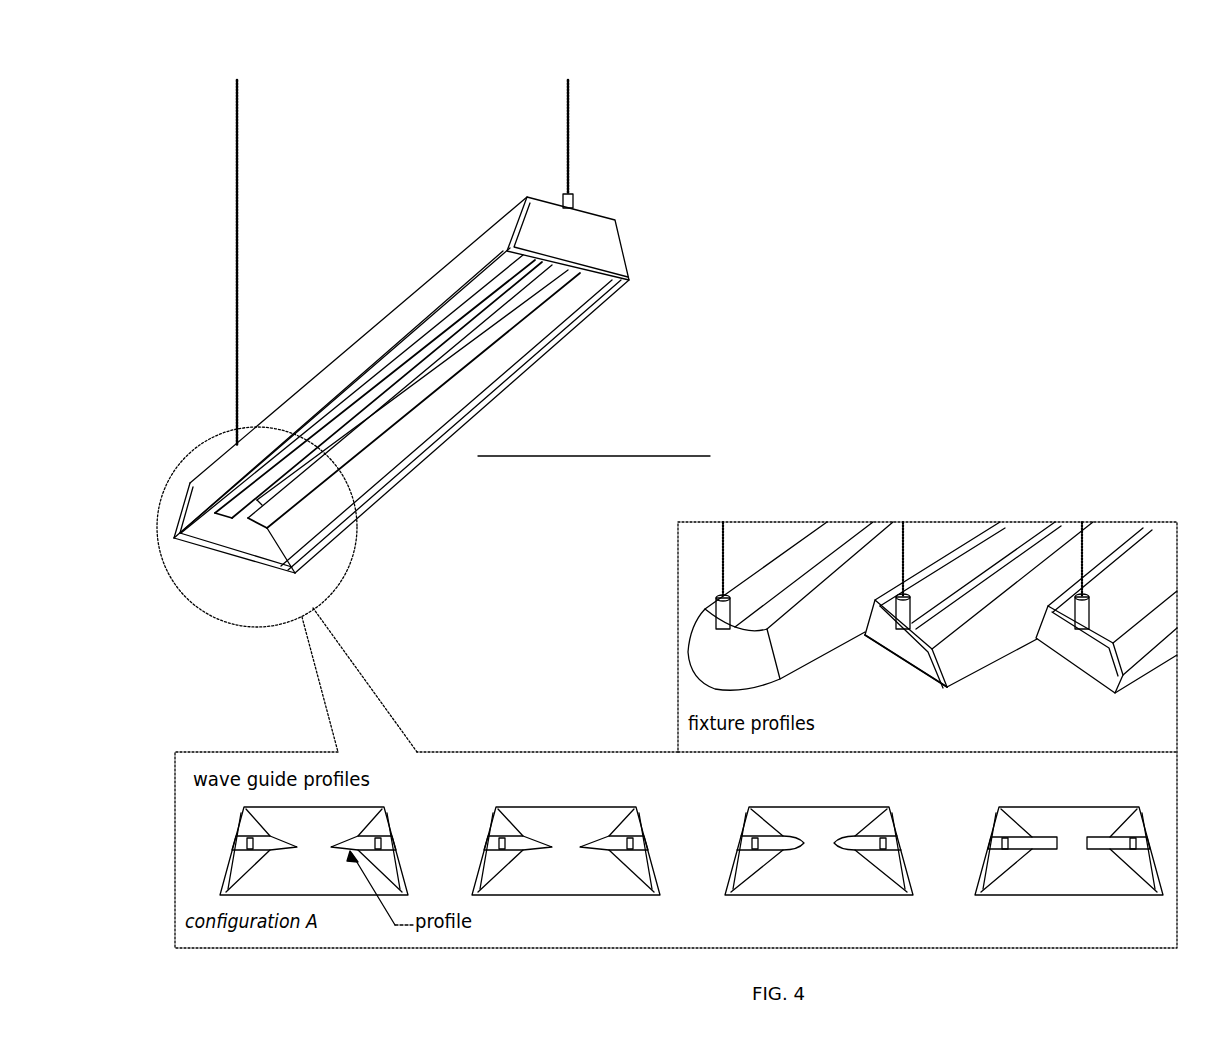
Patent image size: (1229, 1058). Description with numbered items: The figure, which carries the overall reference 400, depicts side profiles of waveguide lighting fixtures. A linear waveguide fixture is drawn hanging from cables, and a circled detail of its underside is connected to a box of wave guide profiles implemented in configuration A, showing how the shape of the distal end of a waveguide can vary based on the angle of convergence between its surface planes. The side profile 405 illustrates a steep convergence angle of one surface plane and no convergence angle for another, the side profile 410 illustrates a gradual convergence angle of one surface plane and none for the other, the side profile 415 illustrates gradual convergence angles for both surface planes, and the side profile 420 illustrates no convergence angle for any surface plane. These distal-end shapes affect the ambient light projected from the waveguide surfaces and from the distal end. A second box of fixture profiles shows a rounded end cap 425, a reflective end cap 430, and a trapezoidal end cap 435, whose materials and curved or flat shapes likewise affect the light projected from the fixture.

The linear wave guide lighting fixture system 400 is at (973, 963).
The side profile 405 is at (325, 845).
The side profile 410 is at (580, 845).
The side profile 415 is at (832, 840).
The side profile 420 is at (1083, 837).
The rounded end cap 425 is at (803, 667).
The reflective end cap 430 is at (947, 695).
The trapezoidal end cap 435 is at (1123, 695).